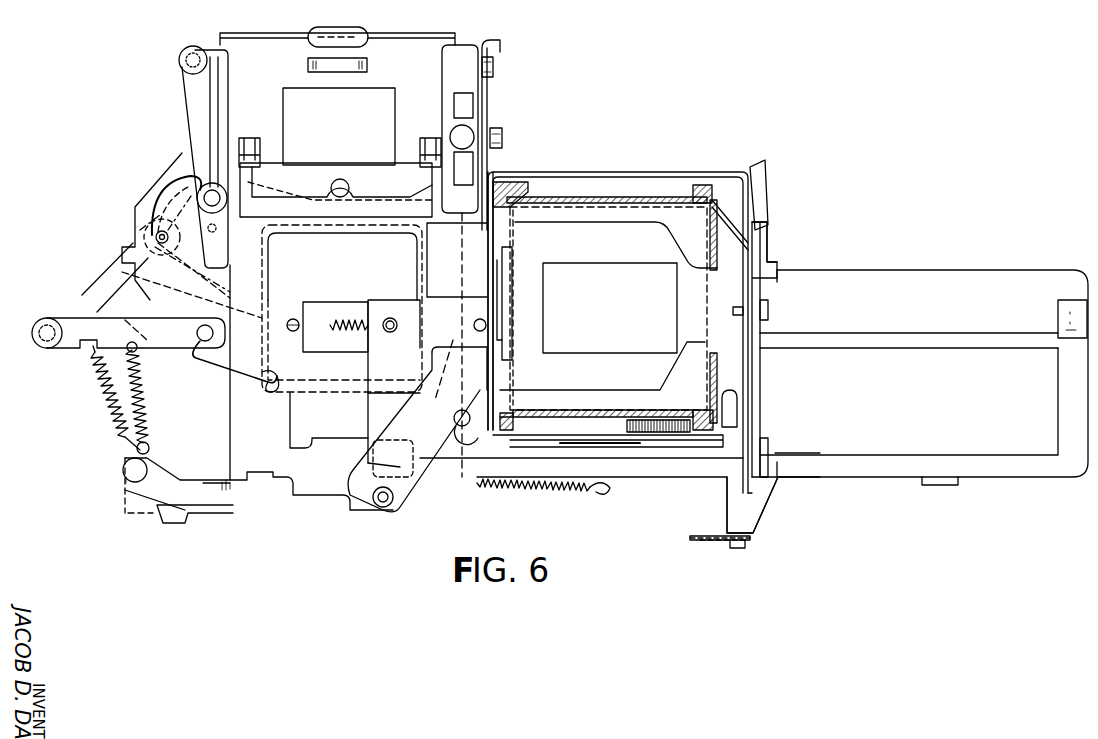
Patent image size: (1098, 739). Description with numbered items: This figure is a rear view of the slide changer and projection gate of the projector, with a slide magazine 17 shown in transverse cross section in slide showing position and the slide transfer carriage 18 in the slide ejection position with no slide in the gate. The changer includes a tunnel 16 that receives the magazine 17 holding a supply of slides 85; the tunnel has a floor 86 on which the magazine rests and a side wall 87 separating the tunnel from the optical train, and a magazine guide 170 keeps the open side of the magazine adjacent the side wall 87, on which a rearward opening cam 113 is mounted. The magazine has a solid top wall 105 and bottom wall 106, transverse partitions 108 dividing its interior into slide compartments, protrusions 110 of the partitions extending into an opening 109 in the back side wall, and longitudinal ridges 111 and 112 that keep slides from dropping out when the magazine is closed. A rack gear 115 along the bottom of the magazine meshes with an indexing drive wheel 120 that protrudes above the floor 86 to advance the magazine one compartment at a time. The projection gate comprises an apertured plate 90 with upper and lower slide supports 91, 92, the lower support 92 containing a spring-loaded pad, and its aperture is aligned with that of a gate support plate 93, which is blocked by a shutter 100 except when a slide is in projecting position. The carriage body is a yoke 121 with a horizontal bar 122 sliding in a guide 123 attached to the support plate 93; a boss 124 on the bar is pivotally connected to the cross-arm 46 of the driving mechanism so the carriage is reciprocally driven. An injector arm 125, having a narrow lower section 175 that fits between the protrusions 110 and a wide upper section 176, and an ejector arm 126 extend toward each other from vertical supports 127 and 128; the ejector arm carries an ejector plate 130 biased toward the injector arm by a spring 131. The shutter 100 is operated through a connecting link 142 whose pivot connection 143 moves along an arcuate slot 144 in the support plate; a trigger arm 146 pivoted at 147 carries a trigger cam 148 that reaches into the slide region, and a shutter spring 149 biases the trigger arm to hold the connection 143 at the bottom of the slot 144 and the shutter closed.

The tunnel 16 is at (575, 165).
The slide magazine 17 is at (660, 193).
The slide transfer carriage 18 is at (1003, 479).
The cross-arm 46 is at (698, 541).
The slides 85 is at (693, 300).
The floor 86 is at (617, 446).
The side wall 87 is at (497, 165).
The apertured plate 90 is at (265, 48).
The upper slide support 91 is at (367, 177).
The lower slide support 92 is at (303, 421).
The gate support plate 93 is at (90, 279).
The shutter 100 is at (282, 257).
The top wall 105 is at (612, 197).
The bottom wall 106 is at (593, 415).
The partitions 108 is at (615, 385).
The opening 109 is at (762, 241).
The protrusions 110 is at (697, 345).
The upper ridge 111 is at (512, 227).
The lower ridge 112 is at (507, 413).
The rearward opening cam 113 is at (505, 295).
The rack gear 115 is at (700, 431).
The indexing drive wheel 120 is at (648, 422).
The yoke 121 is at (863, 480).
The horizontal bar 122 is at (667, 472).
The guide 123 is at (427, 463).
The boss 124 is at (752, 517).
The injector arm 125 is at (880, 268).
The ejector arm 126 is at (402, 312).
The vertical support 127 is at (380, 405).
The vertical support 128 is at (1072, 418).
The ejector plate 130 is at (447, 243).
The spring 131 is at (330, 318).
The connecting link 142 is at (82, 295).
The pivot connection 143 is at (150, 236).
The arcuate slot 144 is at (172, 188).
The trigger arm 146 is at (170, 325).
The pivot 147 is at (200, 341).
The trigger cam 148 is at (273, 377).
The shutter spring 149 is at (110, 410).
The magazine guide 170 is at (727, 402).
The narrow lower section 175 is at (993, 338).
The wide upper section 176 is at (988, 278).